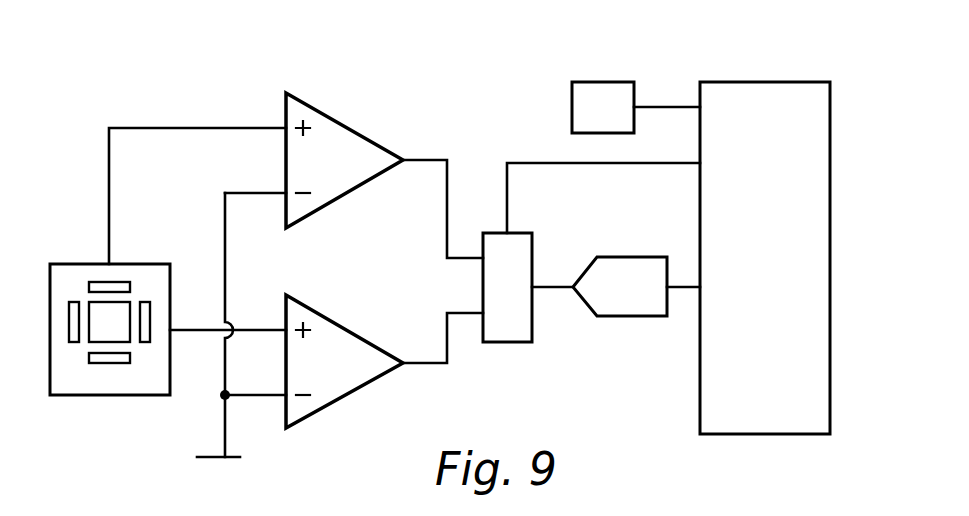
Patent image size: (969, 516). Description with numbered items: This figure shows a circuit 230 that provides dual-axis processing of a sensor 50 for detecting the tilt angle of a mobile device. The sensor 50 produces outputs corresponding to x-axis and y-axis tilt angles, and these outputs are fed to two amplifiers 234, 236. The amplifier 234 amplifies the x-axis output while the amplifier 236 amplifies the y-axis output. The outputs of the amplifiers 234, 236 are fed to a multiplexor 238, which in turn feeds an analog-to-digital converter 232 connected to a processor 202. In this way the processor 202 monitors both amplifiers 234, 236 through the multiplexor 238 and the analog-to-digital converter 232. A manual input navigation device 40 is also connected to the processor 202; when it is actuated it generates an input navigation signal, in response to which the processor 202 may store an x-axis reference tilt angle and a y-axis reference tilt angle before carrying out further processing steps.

The sensing system 230 is at (510, 68).
The sensor 50 is at (113, 397).
The amplifier 234 is at (363, 135).
The amplifier 236 is at (358, 335).
The multiplexor 238 is at (533, 257).
The analog-to-digital converter 232 is at (615, 317).
The manual input navigation device 40 is at (607, 80).
The processor 202 is at (772, 435).